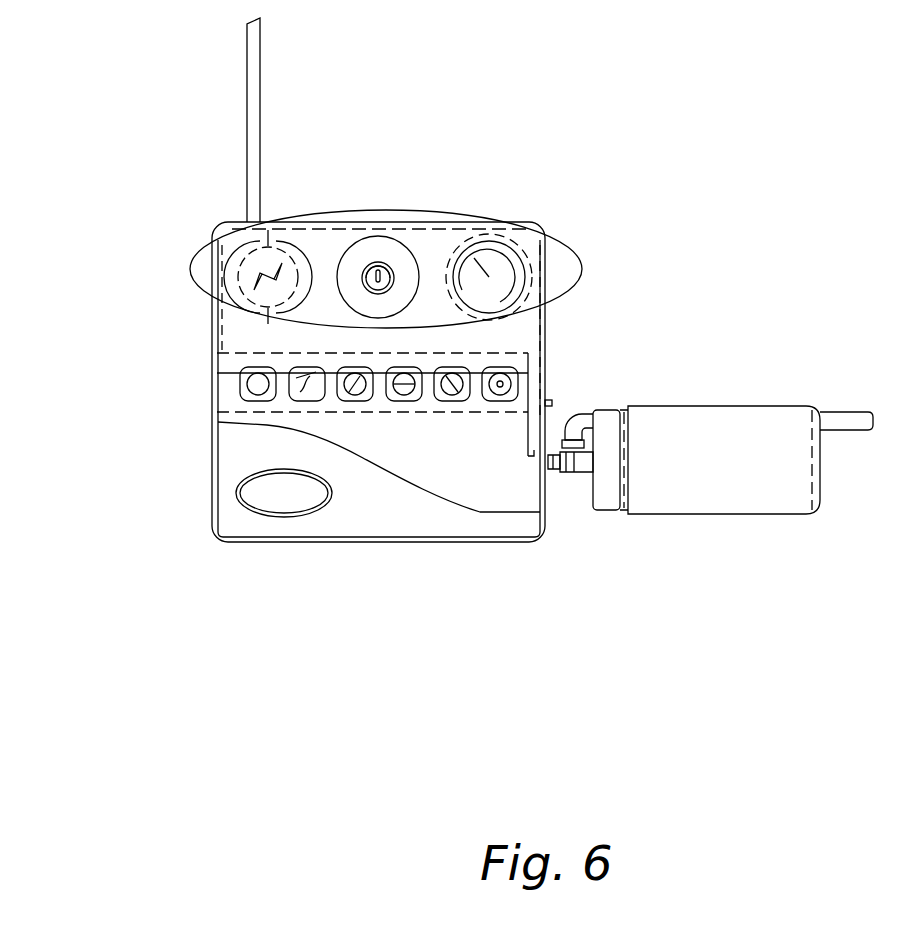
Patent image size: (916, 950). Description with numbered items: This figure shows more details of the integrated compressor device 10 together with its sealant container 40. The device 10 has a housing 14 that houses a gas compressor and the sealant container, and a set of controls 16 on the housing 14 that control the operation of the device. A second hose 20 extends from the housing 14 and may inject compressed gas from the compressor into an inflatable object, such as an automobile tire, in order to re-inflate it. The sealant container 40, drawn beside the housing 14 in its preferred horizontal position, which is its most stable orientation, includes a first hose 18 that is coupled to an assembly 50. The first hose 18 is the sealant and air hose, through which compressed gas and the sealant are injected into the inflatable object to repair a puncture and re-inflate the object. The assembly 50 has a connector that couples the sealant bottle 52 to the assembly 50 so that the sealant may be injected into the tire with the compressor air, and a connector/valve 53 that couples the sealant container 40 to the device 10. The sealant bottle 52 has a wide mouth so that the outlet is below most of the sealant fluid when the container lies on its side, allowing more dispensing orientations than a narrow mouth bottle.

The integrated compressor device 10 is at (172, 137).
The housing 14 is at (345, 538).
The set of controls 16 is at (432, 208).
The first hose 18 is at (843, 422).
The second hose 20 is at (255, 53).
The sealant container 40 is at (735, 357).
The assembly 50 is at (612, 492).
The sealant bottle 52 is at (720, 460).
The connector/valve 53 is at (578, 474).